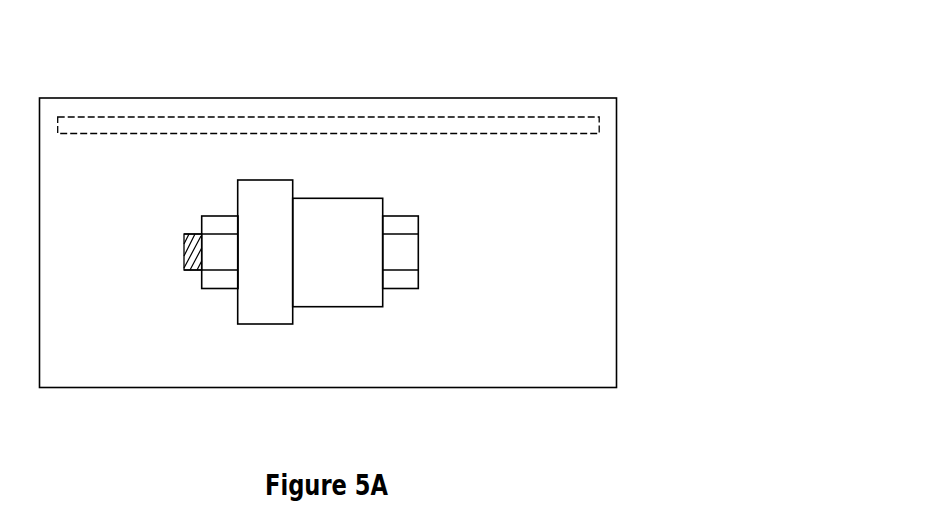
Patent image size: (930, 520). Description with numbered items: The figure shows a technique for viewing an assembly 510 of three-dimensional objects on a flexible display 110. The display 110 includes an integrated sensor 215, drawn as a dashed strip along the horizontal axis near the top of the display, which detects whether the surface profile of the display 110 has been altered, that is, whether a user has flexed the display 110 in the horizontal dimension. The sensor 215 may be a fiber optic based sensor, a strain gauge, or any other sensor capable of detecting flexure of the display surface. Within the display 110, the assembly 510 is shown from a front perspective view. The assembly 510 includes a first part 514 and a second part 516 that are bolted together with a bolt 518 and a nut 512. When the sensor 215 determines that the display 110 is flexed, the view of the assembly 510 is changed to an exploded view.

The flexible display 110 is at (695, 63).
The integrated sensor 215 is at (167, 134).
The assembly 510 is at (440, 208).
The nut 512 is at (210, 288).
The first part 514 is at (265, 324).
The second part 516 is at (365, 307).
The bolt 518 is at (400, 288).